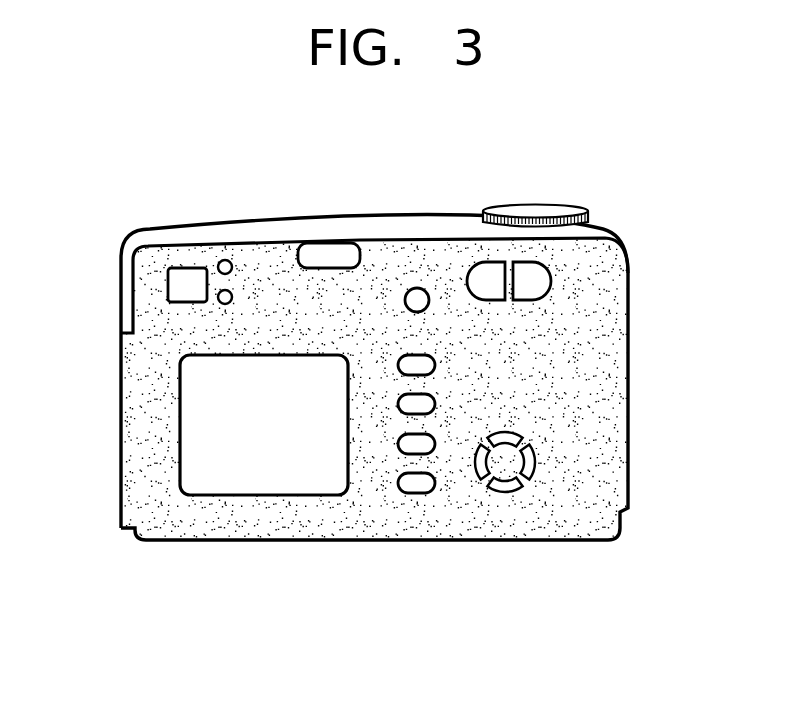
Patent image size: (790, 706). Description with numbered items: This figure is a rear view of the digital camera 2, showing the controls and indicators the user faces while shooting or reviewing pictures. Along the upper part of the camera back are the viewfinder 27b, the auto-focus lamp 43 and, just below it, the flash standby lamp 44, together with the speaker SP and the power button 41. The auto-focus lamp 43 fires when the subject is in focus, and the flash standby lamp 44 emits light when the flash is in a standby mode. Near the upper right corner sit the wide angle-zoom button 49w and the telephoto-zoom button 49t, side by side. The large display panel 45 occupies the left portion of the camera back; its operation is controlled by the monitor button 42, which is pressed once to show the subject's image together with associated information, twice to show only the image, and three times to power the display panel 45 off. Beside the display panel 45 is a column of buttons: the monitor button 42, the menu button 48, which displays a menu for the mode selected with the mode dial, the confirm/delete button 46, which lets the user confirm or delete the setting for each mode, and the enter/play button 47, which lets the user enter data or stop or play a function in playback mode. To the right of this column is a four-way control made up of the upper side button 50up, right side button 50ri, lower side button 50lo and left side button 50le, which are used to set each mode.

The digital camera 2 is at (125, 588).
The viewfinder 27b is at (184, 272).
The power button 41 is at (417, 289).
The monitor button 42 is at (435, 365).
The auto-focus lamp 43 is at (225, 260).
The flash standby lamp 44 is at (217, 300).
The display panel 45 is at (264, 477).
The confirm/delete button 46 is at (400, 452).
The enter/play button 47 is at (417, 492).
The menu button 48 is at (435, 404).
The wide angle-zoom button 49w is at (485, 278).
The telephoto-zoom button 49t is at (532, 278).
The upper side button 50up is at (518, 437).
The right side button 50ri is at (536, 462).
The left side button 50le is at (478, 477).
The lower side button 50lo is at (505, 491).
The speaker SP is at (329, 248).